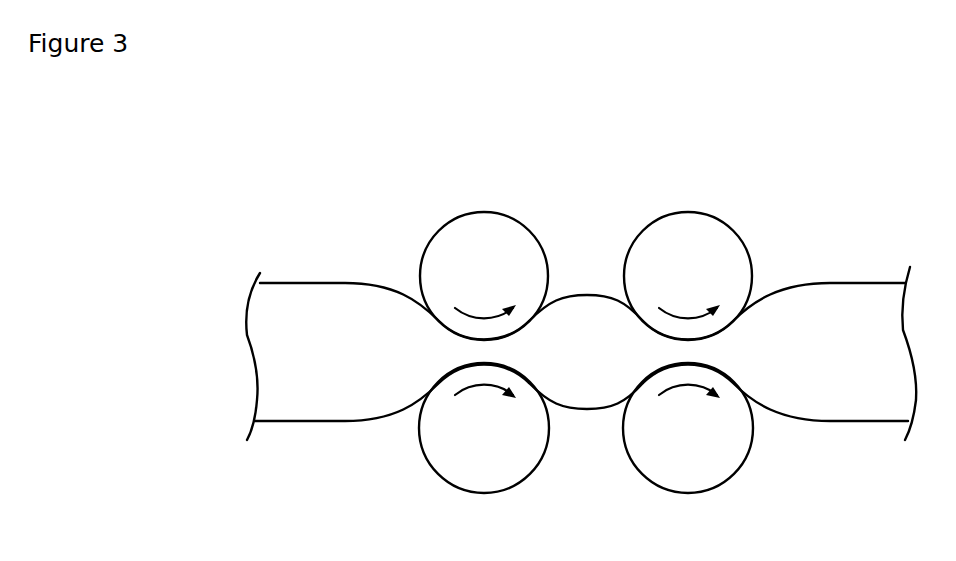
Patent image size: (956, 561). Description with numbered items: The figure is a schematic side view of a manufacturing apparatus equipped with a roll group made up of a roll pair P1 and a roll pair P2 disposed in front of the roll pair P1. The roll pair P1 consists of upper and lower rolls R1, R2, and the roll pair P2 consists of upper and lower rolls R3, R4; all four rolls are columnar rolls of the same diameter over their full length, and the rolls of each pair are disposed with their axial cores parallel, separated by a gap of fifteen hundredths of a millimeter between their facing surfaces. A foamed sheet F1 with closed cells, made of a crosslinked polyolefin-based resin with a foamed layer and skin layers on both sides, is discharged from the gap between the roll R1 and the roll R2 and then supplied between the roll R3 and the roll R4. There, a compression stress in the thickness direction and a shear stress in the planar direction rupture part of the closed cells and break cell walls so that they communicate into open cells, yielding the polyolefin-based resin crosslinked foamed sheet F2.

The foamed sheet with closed cells F1 is at (325, 300).
The polyolefin-based resin crosslinked foamed sheet F2 is at (848, 300).
The roll pair P1 is at (407, 143).
The roll pair P2 is at (790, 143).
The roll R1 is at (497, 233).
The roll R2 is at (430, 433).
The roll R3 is at (733, 432).
The roll R4 is at (688, 233).